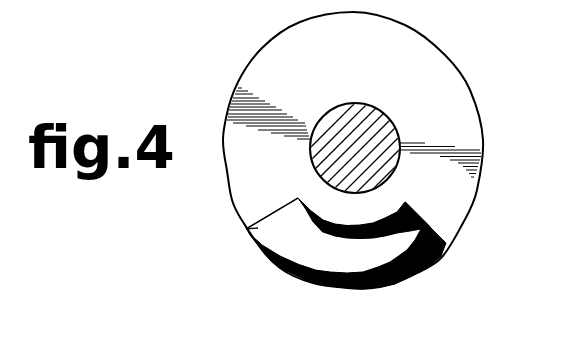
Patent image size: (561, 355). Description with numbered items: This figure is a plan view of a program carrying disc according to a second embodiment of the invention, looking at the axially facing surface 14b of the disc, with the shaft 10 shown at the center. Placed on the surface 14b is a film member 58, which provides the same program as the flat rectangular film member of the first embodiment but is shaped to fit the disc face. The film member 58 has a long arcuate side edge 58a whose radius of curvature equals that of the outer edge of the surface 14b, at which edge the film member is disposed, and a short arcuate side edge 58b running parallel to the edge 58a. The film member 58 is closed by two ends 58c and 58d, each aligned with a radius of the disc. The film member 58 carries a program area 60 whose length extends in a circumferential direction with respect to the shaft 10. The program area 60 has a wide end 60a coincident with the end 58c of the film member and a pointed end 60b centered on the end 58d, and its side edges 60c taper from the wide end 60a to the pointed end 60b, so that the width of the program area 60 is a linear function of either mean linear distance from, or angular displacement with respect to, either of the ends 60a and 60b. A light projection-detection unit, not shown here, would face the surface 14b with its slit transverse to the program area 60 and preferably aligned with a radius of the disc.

The shaft 10 is at (355, 106).
The axially facing surface of the disc 14b is at (437, 67).
The film member 58 is at (440, 258).
The long arcuate side edge 58a is at (366, 286).
The short arcuate side edge 58b is at (352, 224).
The end of film member 58c is at (262, 218).
The end of film member 58d is at (444, 242).
The program area 60 is at (290, 243).
The wide end of program area 60a is at (258, 228).
The pointed end of program area 60b is at (428, 224).
The side edges of program area 60c is at (320, 228).